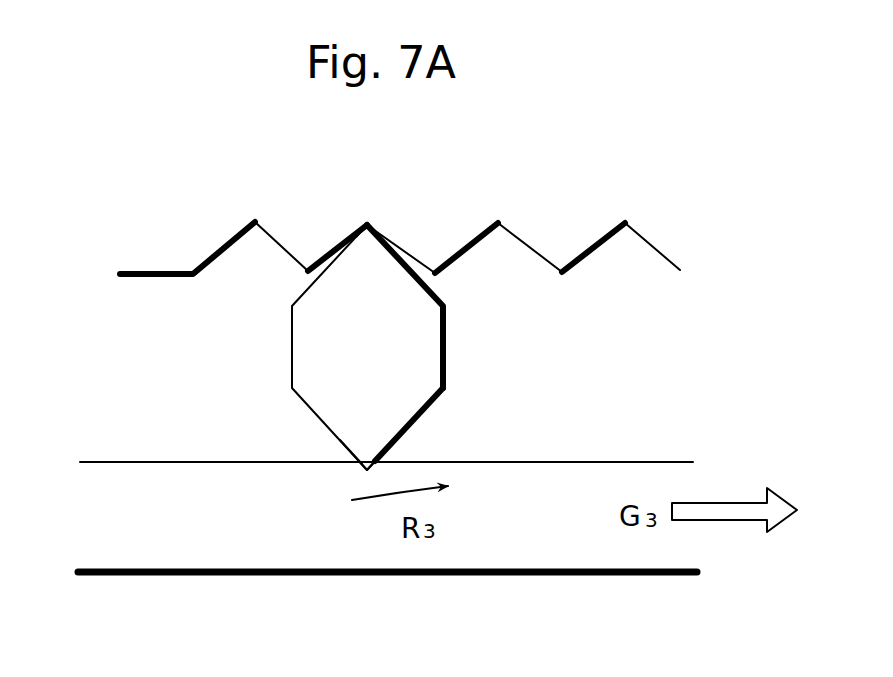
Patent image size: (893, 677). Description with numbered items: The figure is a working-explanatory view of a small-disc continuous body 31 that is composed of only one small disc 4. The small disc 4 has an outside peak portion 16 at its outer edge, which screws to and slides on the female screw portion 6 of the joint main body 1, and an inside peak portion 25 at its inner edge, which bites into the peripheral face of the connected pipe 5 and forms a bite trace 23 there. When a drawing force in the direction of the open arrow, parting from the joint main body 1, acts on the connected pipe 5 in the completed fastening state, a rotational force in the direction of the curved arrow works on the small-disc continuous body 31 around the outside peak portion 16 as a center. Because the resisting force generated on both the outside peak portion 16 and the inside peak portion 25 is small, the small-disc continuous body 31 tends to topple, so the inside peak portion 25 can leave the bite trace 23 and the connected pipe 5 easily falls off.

The joint main body 1 is at (150, 278).
The female screw portion 6 is at (273, 246).
The outside peak portion 16 is at (368, 224).
The small disc 4 is at (449, 318).
The small-disc continuous body 31 is at (435, 380).
The connected pipe 5 is at (666, 460).
The bite trace 23 is at (362, 465).
The inside peak portion 25 is at (367, 472).